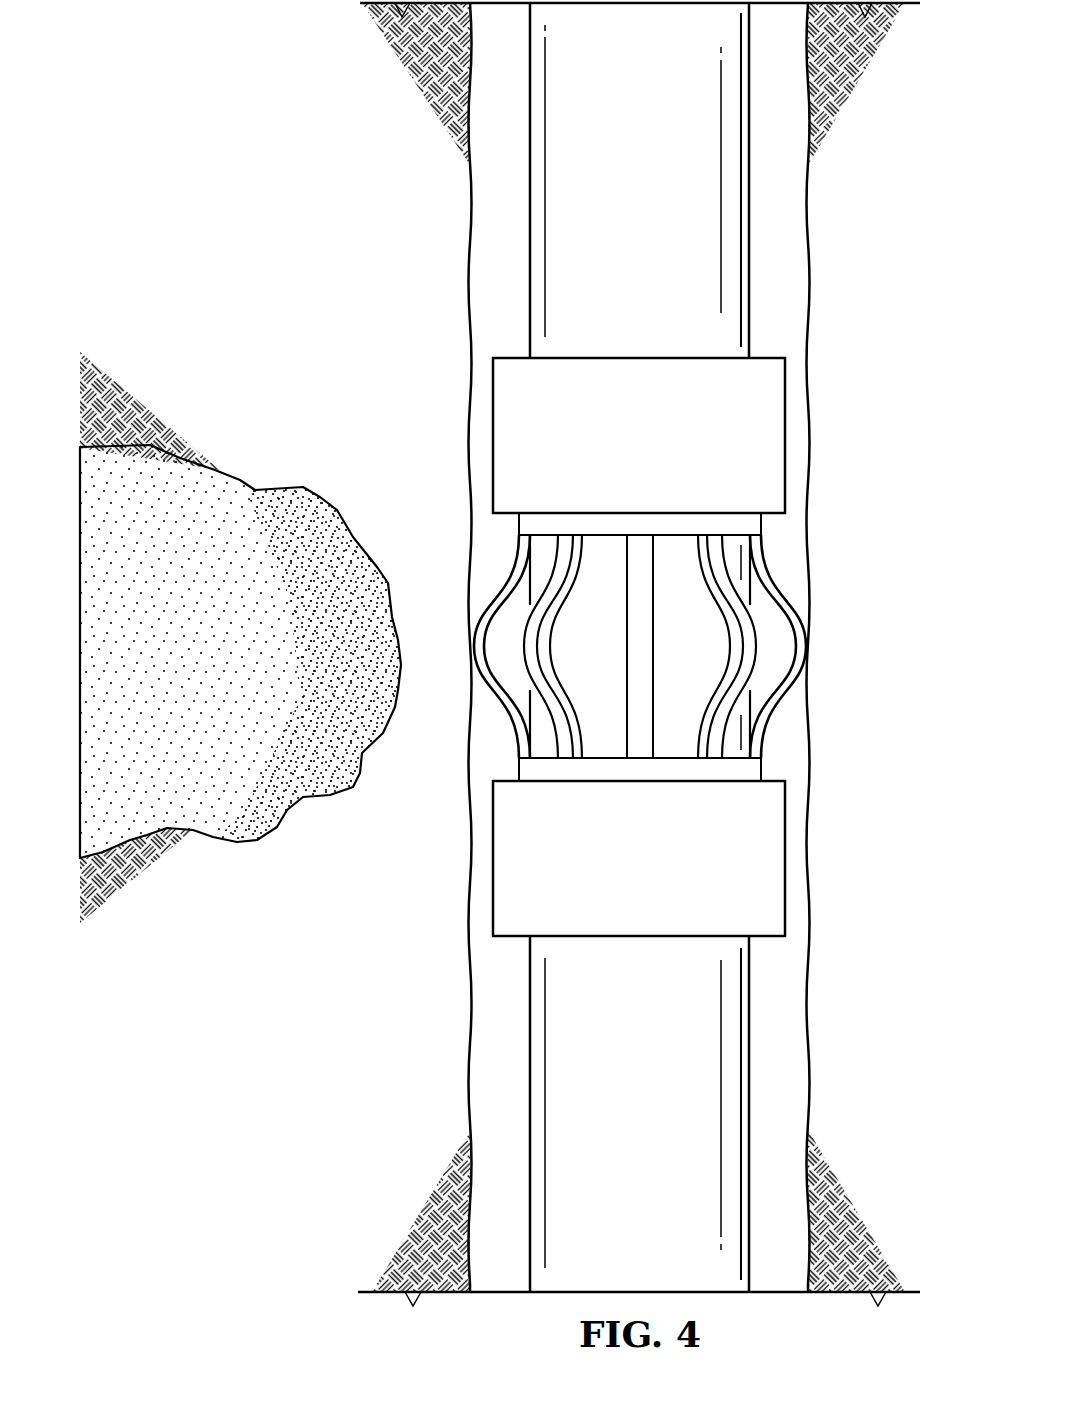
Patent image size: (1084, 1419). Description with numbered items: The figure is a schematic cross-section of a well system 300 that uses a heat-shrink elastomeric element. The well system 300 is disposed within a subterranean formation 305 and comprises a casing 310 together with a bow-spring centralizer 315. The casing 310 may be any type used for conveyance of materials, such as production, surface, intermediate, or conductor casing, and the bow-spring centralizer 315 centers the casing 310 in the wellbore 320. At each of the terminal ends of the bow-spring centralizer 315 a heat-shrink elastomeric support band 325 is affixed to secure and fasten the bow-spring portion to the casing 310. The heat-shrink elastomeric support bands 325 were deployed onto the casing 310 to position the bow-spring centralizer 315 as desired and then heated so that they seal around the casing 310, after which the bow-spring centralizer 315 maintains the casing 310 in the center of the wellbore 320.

The well system 300 is at (187, 64).
The subterranean formation 305 is at (262, 661).
The casing 310 is at (740, 258).
The bow-spring centralizer 315 is at (782, 582).
The wellbore 320 is at (802, 992).
The heat-shrink elastomeric support band 325 is at (666, 450).